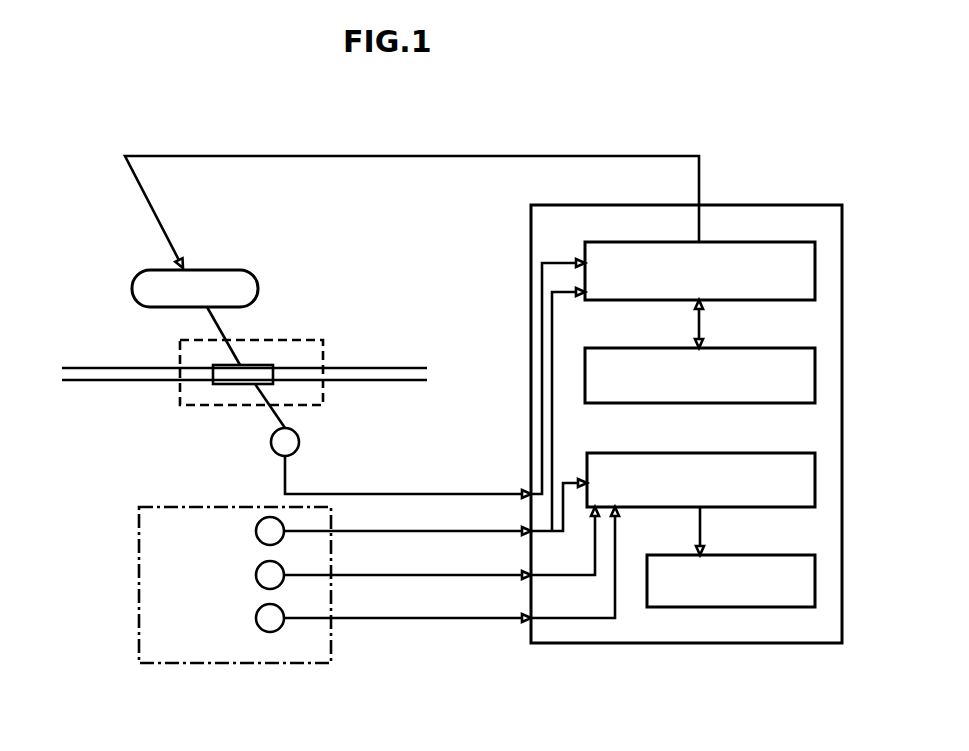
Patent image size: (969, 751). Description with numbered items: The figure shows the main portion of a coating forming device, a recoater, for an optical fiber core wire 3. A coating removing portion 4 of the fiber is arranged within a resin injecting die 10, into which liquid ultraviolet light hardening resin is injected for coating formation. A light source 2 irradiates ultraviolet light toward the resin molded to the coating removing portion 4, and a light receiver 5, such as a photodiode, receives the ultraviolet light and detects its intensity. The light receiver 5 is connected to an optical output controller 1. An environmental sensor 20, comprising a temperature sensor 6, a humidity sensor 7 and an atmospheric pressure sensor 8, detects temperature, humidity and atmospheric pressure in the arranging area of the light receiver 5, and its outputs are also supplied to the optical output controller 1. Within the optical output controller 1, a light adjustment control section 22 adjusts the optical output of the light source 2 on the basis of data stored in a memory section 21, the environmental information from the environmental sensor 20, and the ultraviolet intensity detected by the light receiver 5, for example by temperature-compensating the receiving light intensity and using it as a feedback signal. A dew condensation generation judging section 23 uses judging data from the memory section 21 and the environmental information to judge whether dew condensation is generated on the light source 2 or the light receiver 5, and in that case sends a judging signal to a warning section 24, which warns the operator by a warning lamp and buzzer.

The optical output controller 1 is at (772, 205).
The light source 2 is at (130, 290).
The optical fiber core wire 3 is at (137, 366).
The coating removing portion 4 is at (258, 366).
The light receiver 5 is at (271, 442).
The temperature sensor 6 is at (256, 534).
The humidity sensor 7 is at (256, 578).
The atmospheric pressure sensor 8 is at (256, 621).
The resin injecting die 10 is at (300, 360).
The environmental sensor 20 is at (138, 580).
The memory section 21 is at (815, 377).
The light adjustment control section 22 is at (815, 270).
The dew condensation generation judging section 23 is at (815, 480).
The warning section 24 is at (815, 586).